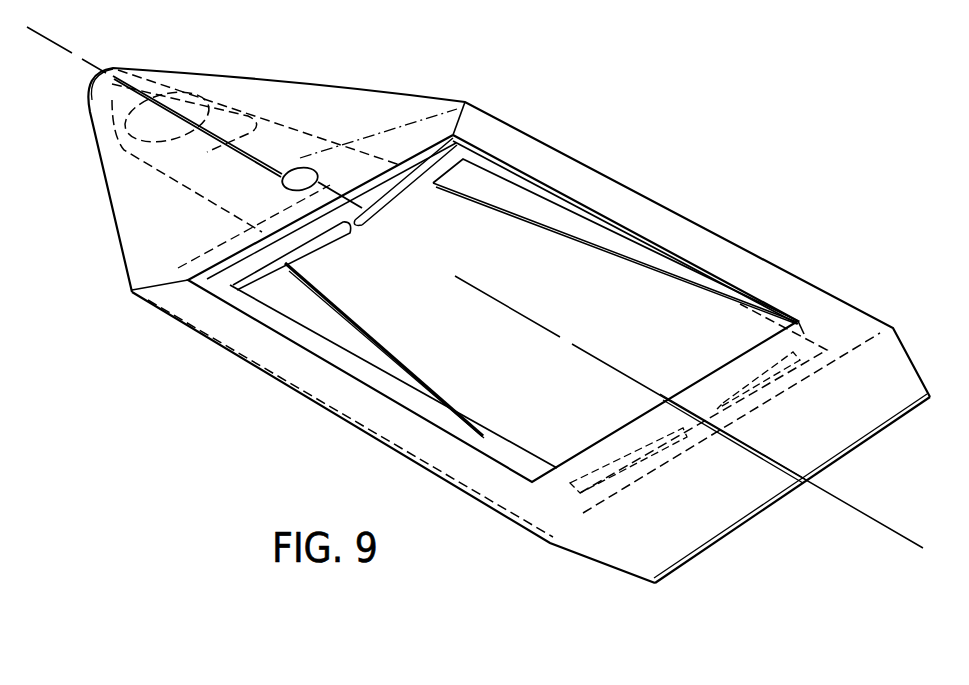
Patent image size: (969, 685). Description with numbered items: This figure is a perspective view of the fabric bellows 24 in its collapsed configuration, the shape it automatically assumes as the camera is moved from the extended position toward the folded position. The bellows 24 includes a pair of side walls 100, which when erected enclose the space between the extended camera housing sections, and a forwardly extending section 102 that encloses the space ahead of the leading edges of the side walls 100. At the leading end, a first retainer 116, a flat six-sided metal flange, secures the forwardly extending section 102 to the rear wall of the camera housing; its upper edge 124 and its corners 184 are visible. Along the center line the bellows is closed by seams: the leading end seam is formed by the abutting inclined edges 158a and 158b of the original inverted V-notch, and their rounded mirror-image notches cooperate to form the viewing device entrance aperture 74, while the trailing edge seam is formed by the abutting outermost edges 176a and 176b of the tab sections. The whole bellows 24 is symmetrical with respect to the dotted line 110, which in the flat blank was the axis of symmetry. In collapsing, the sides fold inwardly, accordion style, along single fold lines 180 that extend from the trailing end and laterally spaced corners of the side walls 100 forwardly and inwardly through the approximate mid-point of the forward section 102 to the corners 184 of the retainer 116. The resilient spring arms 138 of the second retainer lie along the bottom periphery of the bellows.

The fabric bellows 24 is at (625, 184).
The viewing device entrance aperture 74 is at (306, 172).
The side walls 100 is at (474, 184).
The forwardly extending section 102 is at (347, 84).
The axis of symmetry 110 is at (832, 499).
The first retainer 116 is at (221, 101).
The upper edge 124 is at (100, 71).
The resilient spring arms 138 is at (328, 241).
The left hand inclined edge 158a is at (197, 136).
The right hand inclined edge 158b is at (284, 169).
The outermost edge of tab section 176a is at (761, 432).
The outermost edge of tab section 176b is at (762, 455).
The fold lines 180 is at (207, 186).
The corners 184 is at (156, 94).